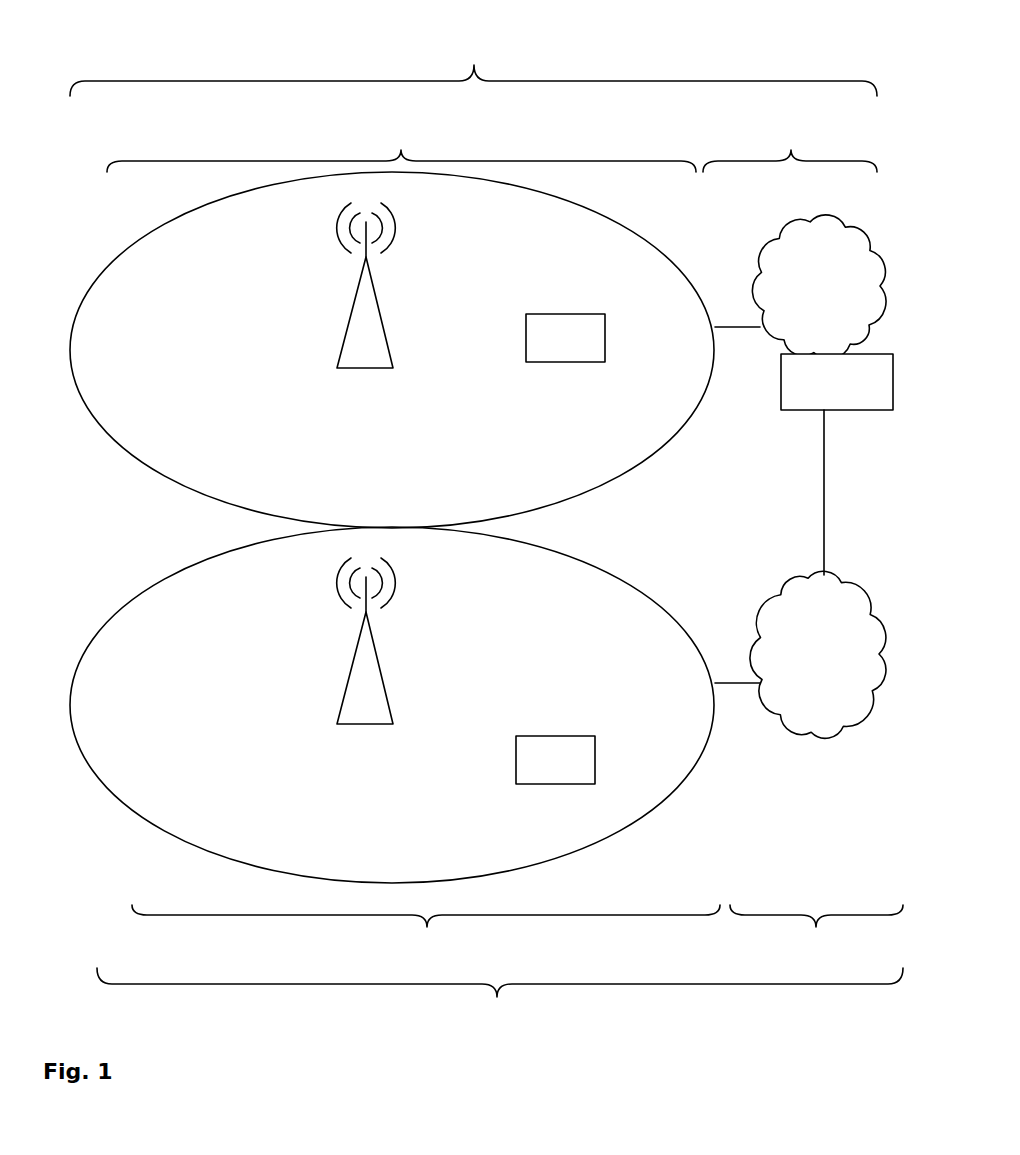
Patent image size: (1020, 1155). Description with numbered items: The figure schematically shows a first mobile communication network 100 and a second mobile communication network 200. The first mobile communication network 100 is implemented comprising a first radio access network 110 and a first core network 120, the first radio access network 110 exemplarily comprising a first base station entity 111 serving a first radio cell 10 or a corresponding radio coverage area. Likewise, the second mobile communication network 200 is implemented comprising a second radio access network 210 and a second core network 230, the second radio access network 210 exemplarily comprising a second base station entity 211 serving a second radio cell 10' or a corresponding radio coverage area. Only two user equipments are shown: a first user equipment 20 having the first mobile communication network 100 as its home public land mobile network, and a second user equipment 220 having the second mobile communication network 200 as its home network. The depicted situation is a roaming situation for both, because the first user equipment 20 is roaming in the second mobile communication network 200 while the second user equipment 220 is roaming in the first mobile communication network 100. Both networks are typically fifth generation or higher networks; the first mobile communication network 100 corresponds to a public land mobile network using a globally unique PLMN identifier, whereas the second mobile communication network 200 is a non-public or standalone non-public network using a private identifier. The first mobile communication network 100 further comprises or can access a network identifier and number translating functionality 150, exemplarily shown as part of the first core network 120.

The first mobile communication network 100 is at (473, 66).
The first radio access network 110 is at (401, 148).
The first core network 120 is at (794, 242).
The first radio cell 10 is at (392, 350).
The first base station entity 111 is at (366, 285).
The second user equipment 220 is at (565, 338).
The network identifier and number translating functionality 150 is at (837, 464).
The second radio cell 10' is at (392, 705).
The second base station entity 211 is at (366, 641).
The first user equipment 20 is at (555, 760).
The second radio access network 210 is at (426, 933).
The second core network 230 is at (809, 766).
The second mobile communication network 200 is at (500, 1000).